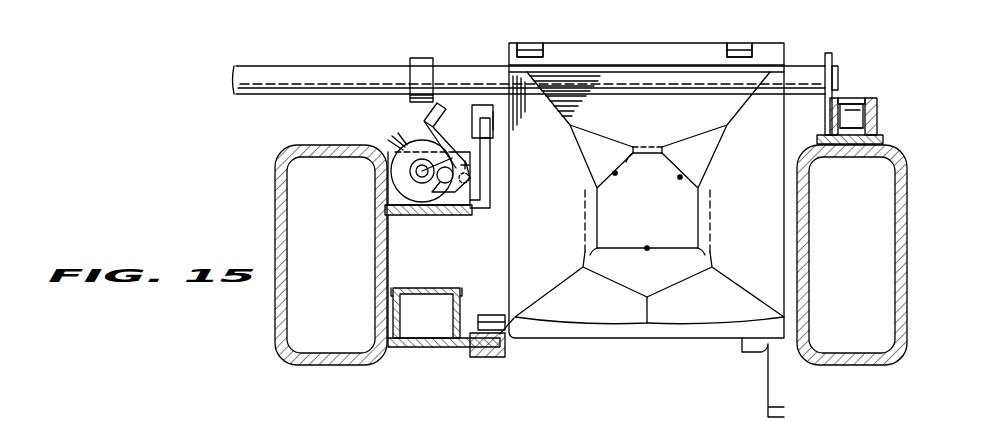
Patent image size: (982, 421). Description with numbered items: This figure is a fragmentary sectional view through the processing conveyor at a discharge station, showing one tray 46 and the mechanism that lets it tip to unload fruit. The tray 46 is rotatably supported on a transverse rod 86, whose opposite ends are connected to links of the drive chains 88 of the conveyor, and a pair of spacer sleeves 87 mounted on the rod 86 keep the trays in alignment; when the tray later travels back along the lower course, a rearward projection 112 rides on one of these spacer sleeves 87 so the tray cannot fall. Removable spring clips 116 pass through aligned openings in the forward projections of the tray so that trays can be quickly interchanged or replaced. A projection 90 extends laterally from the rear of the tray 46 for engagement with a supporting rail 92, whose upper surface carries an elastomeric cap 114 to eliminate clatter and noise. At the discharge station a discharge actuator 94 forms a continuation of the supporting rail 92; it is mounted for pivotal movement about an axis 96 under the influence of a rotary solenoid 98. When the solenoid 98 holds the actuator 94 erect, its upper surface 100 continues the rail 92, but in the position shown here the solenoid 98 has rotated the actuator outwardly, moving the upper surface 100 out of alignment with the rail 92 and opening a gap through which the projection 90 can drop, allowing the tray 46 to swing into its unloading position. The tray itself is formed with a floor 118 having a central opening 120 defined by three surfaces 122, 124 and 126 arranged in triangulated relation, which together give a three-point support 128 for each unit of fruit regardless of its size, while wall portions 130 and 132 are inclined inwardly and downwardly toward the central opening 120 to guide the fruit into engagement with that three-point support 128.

The tray 46 is at (511, 238).
The transverse rod 86 is at (258, 70).
The spacer sleeve 87 is at (450, 63).
The drive chain 88 is at (908, 80).
The projection 90 is at (484, 313).
The supporting rail 92 is at (480, 105).
The discharge actuator 94 is at (469, 165).
The axis 96 is at (470, 182).
The rotary solenoid 98 is at (402, 188).
The upper surface 100 is at (402, 123).
The rearward projection 112 is at (767, 393).
The elastomeric cap 114 is at (493, 125).
The spring clip 116 is at (530, 50).
The floor 118 is at (653, 220).
The central opening 120 is at (680, 250).
The surface 122 is at (606, 250).
The surface 124 is at (650, 154).
The surface 126 is at (680, 177).
The three-point support 128 is at (615, 173).
The wall portion 130 is at (570, 235).
The wall portion 132 is at (772, 215).